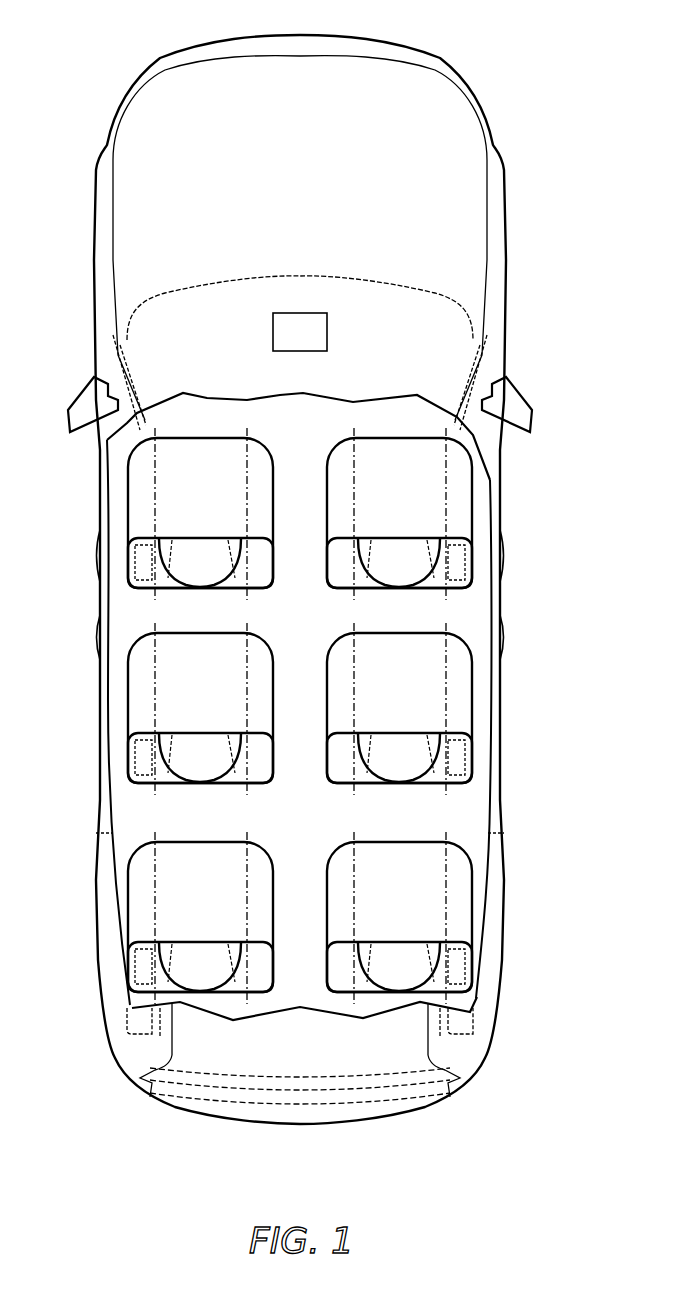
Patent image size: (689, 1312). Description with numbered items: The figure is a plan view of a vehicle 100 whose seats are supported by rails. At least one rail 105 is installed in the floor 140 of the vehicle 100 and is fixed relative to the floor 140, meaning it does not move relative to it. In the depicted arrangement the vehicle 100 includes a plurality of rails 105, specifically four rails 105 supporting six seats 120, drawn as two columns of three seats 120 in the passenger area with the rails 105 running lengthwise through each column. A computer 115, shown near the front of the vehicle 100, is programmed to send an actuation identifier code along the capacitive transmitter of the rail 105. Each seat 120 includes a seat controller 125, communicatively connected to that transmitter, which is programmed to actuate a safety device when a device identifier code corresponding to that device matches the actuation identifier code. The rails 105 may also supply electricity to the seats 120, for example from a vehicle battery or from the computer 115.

The vehicle 100 is at (64, 46).
The rail 105 is at (147, 432).
The computer 115 is at (315, 345).
The seat 120 is at (130, 485).
The seat controller 125 is at (132, 550).
The floor 140 is at (137, 613).